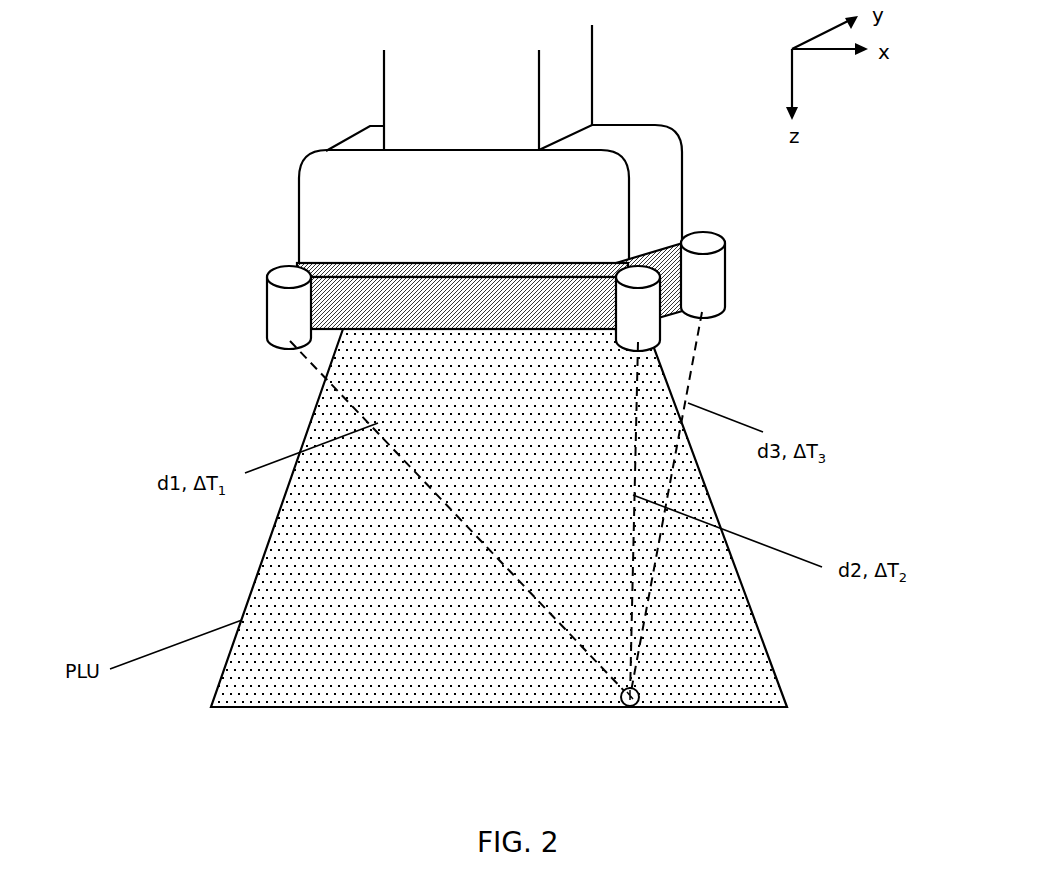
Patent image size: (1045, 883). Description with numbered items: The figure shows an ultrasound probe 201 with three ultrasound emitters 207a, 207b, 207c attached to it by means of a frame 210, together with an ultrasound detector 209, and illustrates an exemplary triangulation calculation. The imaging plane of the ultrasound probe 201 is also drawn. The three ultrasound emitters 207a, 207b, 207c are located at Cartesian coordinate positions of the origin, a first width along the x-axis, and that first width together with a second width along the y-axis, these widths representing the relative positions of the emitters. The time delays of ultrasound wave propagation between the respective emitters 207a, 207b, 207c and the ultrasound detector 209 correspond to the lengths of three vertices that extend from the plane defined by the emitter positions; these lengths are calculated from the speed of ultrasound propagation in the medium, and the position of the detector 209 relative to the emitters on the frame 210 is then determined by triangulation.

The ultrasound probe 201 is at (412, 93).
The ultrasound emitter 207a is at (282, 327).
The ultrasound emitter 207b is at (645, 333).
The ultrasound emitter 207c is at (710, 295).
The ultrasound detector 209 is at (635, 700).
The frame 210 is at (452, 313).